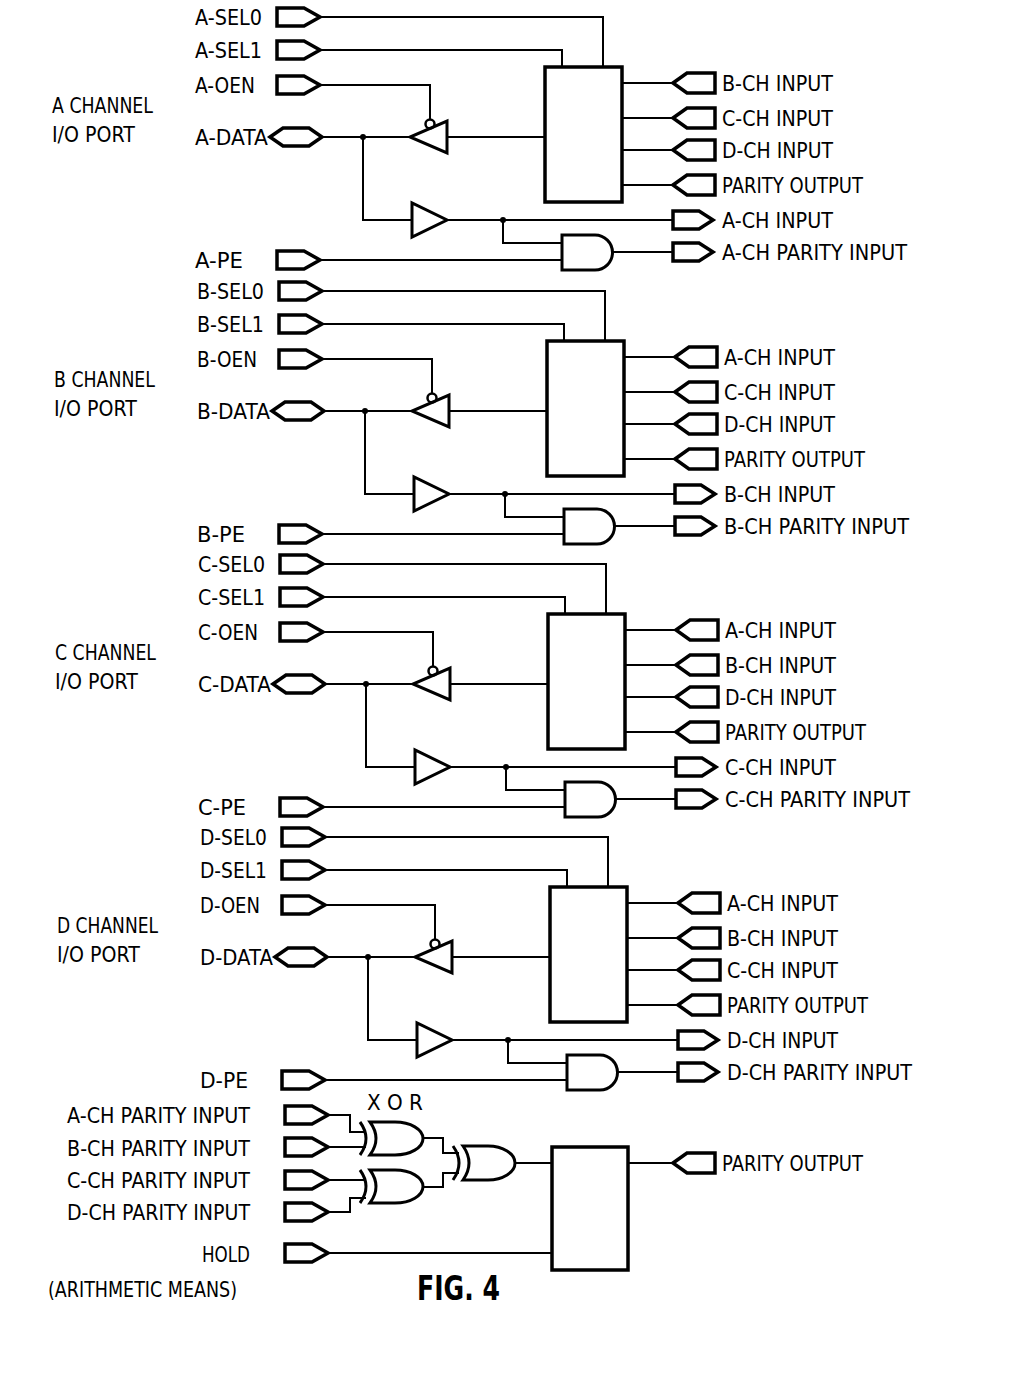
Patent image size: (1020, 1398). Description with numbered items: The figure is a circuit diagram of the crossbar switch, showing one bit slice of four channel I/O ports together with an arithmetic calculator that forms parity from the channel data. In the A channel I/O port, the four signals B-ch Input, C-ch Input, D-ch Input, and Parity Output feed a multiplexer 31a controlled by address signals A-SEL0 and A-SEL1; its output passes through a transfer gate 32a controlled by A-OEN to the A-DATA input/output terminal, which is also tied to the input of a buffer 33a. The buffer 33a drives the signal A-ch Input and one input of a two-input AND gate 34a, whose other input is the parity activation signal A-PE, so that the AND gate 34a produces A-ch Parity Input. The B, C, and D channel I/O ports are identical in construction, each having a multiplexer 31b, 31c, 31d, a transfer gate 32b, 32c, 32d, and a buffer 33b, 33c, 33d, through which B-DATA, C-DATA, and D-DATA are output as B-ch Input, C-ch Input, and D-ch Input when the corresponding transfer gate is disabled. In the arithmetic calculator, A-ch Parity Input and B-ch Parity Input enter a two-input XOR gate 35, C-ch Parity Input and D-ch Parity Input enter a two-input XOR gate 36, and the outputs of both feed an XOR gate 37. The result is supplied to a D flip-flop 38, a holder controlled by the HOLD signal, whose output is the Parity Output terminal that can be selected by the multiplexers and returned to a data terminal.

The multiplexer 31a is at (597, 155).
The multiplexer 31b is at (585, 408).
The multiplexer 31c is at (586, 681).
The multiplexer 31d is at (588, 954).
The transfer gate 32a is at (443, 121).
The transfer gate 32b is at (455, 397).
The transfer gate 32c is at (455, 670).
The transfer gate 32d is at (458, 943).
The buffer 33a is at (432, 210).
The buffer 33b is at (452, 484).
The buffer 33c is at (452, 757).
The buffer 33d is at (455, 1030).
The 2-input AND gate 34a is at (598, 270).
The two-input XOR gate 35 is at (420, 1128).
The two-input XOR gate 36 is at (420, 1200).
The XOR gate 37 is at (495, 1144).
The D flip-flop 38 is at (610, 1147).